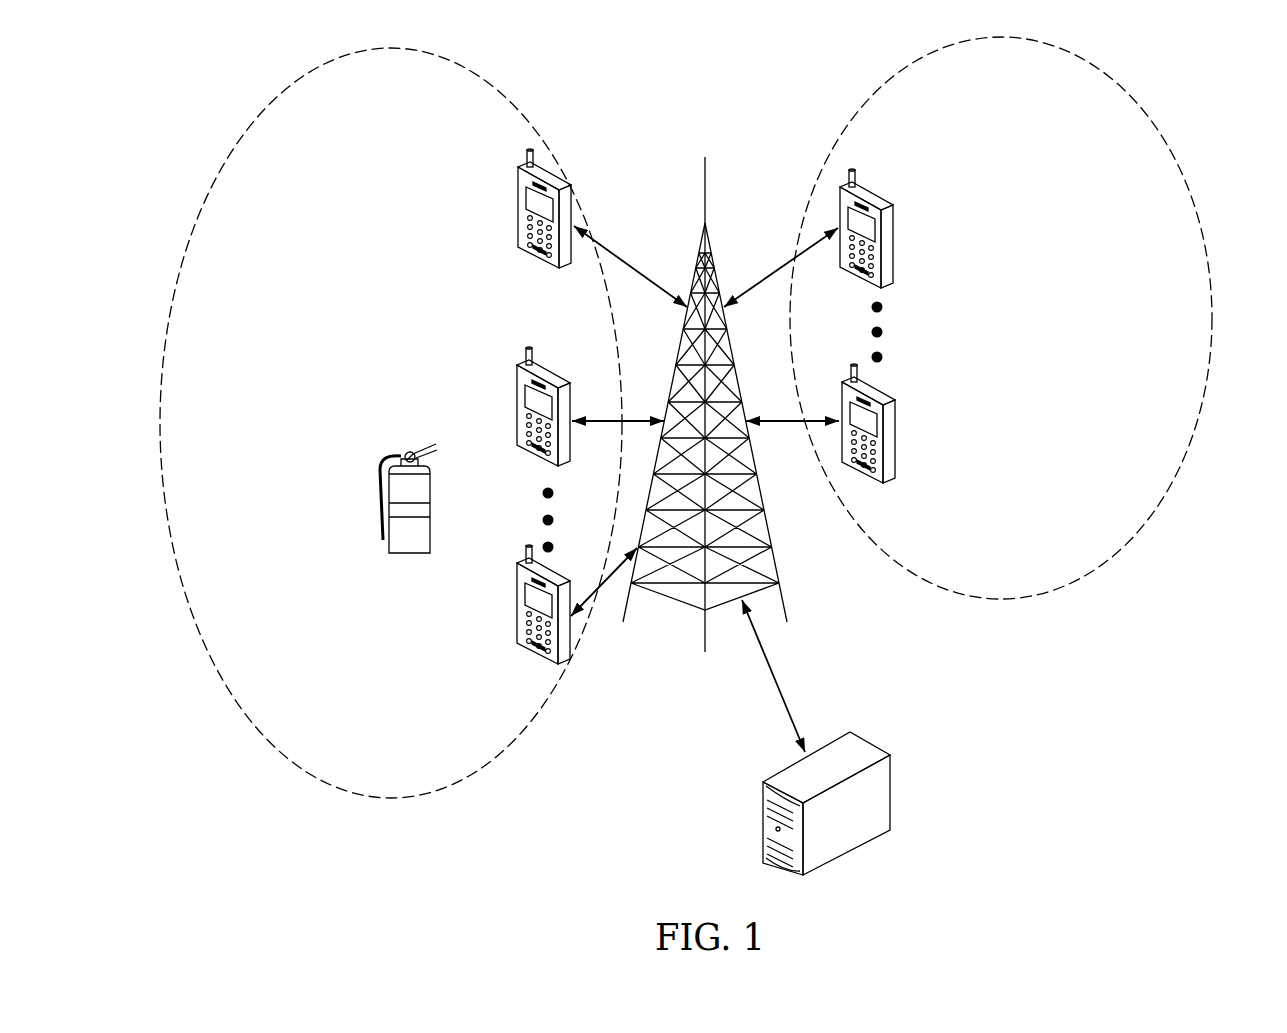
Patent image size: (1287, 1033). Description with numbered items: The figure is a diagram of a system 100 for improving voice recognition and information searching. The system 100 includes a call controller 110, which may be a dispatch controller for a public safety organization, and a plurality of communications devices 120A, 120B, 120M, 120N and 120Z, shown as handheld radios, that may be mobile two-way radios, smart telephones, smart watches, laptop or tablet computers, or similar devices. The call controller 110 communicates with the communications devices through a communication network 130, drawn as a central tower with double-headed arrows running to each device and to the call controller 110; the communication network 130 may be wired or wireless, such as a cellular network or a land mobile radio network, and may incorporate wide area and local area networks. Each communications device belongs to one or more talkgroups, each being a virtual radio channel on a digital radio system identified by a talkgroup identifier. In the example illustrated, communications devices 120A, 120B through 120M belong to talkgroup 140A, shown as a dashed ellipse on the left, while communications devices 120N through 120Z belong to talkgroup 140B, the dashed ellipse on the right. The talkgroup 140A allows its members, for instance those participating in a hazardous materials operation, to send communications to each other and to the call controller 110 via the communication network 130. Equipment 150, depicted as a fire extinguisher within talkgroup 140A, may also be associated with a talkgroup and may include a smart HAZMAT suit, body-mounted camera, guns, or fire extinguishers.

The system 100 is at (1210, 70).
The call controller 110 is at (848, 851).
The communications device 120A is at (518, 205).
The communications device 120B is at (517, 402).
The communications device 120M is at (517, 600).
The communications device 120N is at (893, 241).
The communications device 120Z is at (893, 440).
The communication network 130 is at (705, 177).
The talkgroup 140A is at (390, 800).
The talkgroup 140B is at (1000, 600).
The equipment 150 is at (382, 504).